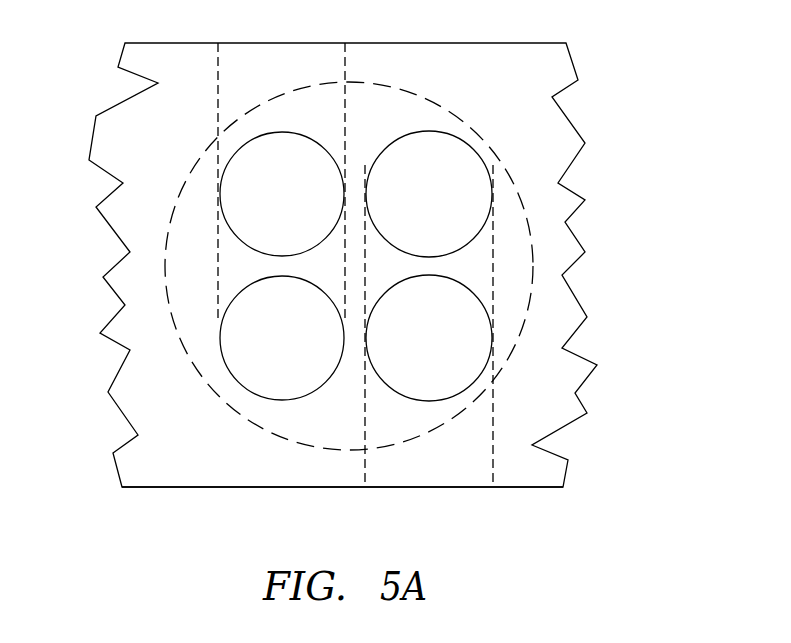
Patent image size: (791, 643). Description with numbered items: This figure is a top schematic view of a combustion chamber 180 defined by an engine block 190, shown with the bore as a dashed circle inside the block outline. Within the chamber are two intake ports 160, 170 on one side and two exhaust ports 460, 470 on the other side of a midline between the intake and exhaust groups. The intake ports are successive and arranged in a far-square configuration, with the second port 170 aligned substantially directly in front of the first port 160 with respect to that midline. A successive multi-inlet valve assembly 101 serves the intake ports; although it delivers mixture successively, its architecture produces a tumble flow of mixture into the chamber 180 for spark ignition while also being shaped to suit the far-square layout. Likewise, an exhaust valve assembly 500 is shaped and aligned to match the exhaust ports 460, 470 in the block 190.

The successive multi-inlet valve assembly 101 is at (248, 68).
The combustion chamber 180 is at (385, 88).
The first intake port 160 is at (243, 168).
The second intake port 170 is at (238, 370).
The exhaust port 460 is at (473, 217).
The exhaust port 470 is at (467, 367).
The exhaust valve assembly 500 is at (428, 477).
The engine block 190 is at (233, 459).